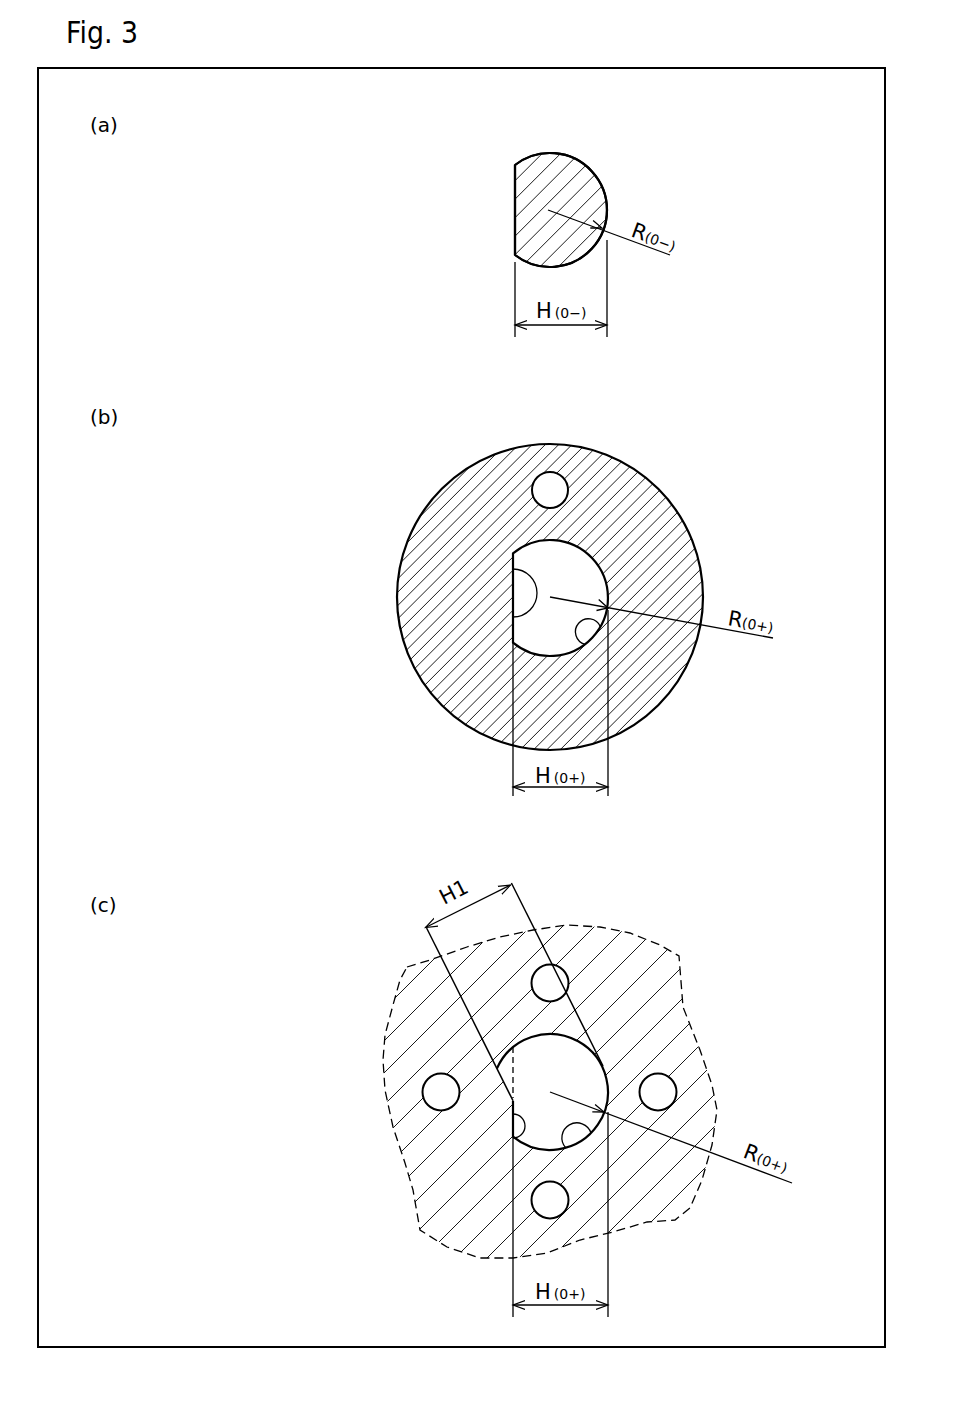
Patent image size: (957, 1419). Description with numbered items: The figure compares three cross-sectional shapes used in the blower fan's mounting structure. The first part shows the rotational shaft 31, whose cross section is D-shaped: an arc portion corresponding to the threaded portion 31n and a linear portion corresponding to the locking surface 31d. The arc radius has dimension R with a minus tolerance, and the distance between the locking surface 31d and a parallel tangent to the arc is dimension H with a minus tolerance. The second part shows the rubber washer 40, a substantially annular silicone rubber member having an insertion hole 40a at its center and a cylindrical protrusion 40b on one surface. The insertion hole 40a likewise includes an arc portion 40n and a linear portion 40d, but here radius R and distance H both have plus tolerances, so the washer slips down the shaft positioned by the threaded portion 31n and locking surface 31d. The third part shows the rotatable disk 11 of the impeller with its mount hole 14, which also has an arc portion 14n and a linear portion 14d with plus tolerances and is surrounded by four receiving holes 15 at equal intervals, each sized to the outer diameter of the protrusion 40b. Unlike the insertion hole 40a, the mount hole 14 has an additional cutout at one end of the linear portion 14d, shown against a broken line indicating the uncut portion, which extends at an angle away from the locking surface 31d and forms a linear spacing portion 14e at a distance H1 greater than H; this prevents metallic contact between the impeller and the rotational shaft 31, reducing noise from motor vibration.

The rotational shaft 31 is at (362, 183).
The locking surface 31d is at (515, 196).
The threaded portion 31n is at (600, 180).
The rubber washer 40 is at (312, 510).
The insertion hole 40a is at (568, 576).
The protrusion 40b is at (537, 477).
The linear portion 40d is at (513, 566).
The arc portion 40n is at (586, 644).
The rotatable disk 11 is at (312, 978).
The mount hole 14 is at (578, 1079).
The spacing portion 14e is at (495, 1066).
The linear portion 14d is at (522, 1126).
The arc portion 14n is at (580, 1152).
The receiving holes 15 is at (540, 968).